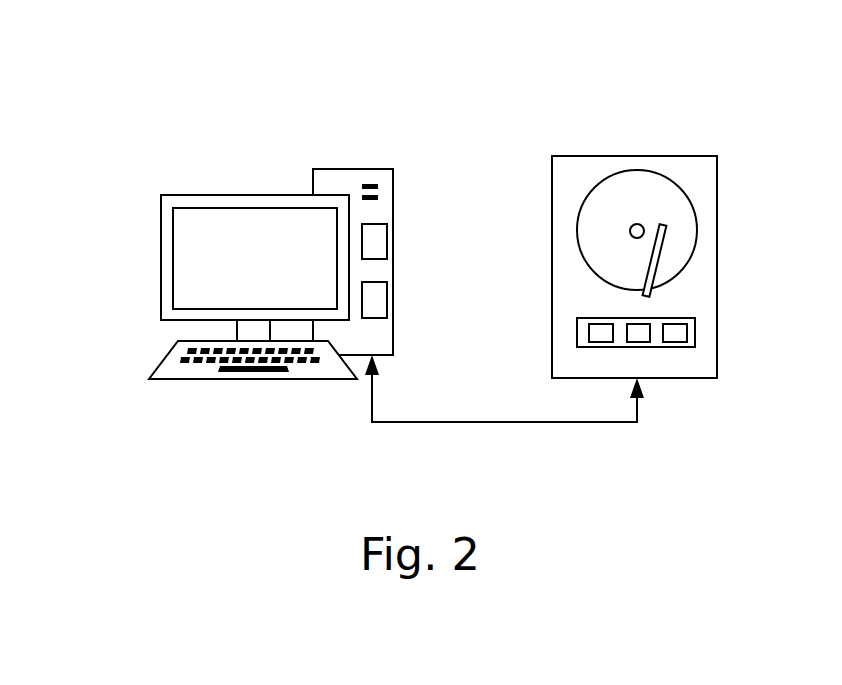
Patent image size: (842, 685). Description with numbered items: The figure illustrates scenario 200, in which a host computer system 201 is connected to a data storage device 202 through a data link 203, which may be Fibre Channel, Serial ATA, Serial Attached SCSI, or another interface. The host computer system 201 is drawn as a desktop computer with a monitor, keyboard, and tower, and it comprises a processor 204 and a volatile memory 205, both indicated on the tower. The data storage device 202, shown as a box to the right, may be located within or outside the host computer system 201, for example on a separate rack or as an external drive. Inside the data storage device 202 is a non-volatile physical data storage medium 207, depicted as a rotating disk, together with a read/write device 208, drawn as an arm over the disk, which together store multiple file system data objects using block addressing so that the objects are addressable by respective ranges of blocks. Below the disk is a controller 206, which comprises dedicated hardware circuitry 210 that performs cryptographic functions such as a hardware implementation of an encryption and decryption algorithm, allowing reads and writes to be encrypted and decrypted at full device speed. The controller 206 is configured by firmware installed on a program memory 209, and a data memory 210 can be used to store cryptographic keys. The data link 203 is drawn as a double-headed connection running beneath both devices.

The scenario 200 is at (119, 91).
The host computer system 201 is at (296, 244).
The data storage device 202 is at (631, 238).
The data link 203 is at (495, 422).
The processor 204 is at (386, 242).
The volatile memory 205 is at (386, 308).
The controller 206 is at (681, 308).
The non-volatile physical data storage medium 207 is at (690, 179).
The read/write device 208 is at (643, 297).
The program memory 209 is at (687, 333).
The hardware circuitry 210 is at (588, 335).